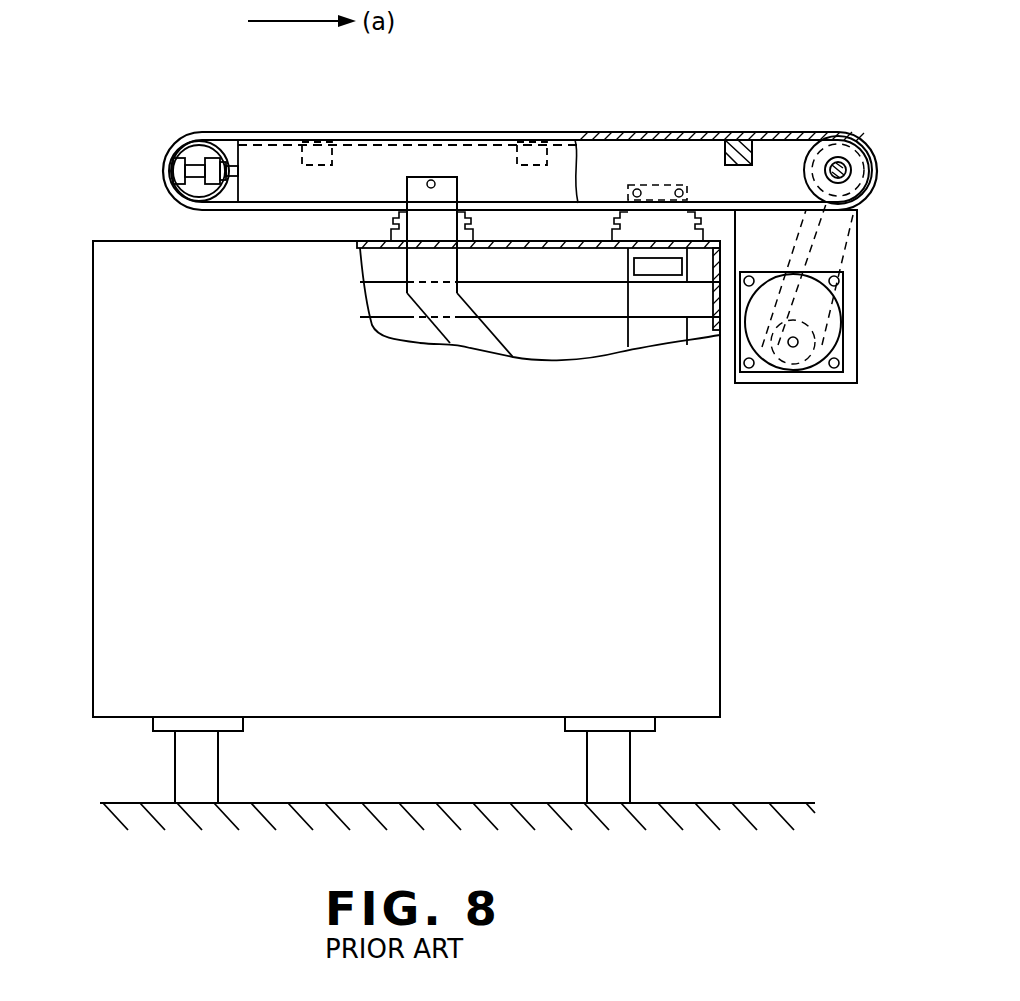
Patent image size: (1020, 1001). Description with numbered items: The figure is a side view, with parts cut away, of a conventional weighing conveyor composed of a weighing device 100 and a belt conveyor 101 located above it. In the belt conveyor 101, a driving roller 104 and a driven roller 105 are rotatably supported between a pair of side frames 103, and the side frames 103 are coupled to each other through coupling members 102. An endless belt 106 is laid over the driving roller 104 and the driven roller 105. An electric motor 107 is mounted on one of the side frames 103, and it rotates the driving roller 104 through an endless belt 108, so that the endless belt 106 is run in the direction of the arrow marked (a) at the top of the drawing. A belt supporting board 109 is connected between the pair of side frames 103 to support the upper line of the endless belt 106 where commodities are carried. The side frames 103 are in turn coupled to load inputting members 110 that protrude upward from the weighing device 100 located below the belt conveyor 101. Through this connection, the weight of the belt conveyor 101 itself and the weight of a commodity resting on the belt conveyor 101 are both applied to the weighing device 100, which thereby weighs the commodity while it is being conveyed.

The weighing device 100 is at (416, 690).
The belt conveyor 101 is at (703, 124).
The coupling members 102 is at (322, 138).
The side frames 103 is at (462, 147).
The driving roller 104 is at (843, 176).
The driven roller 105 is at (206, 152).
The endless belt 106 is at (420, 175).
The electric motor 107 is at (793, 348).
The endless belt 108 is at (852, 272).
The belt supporting board 109 is at (643, 140).
The load inputting members 110 is at (459, 330).